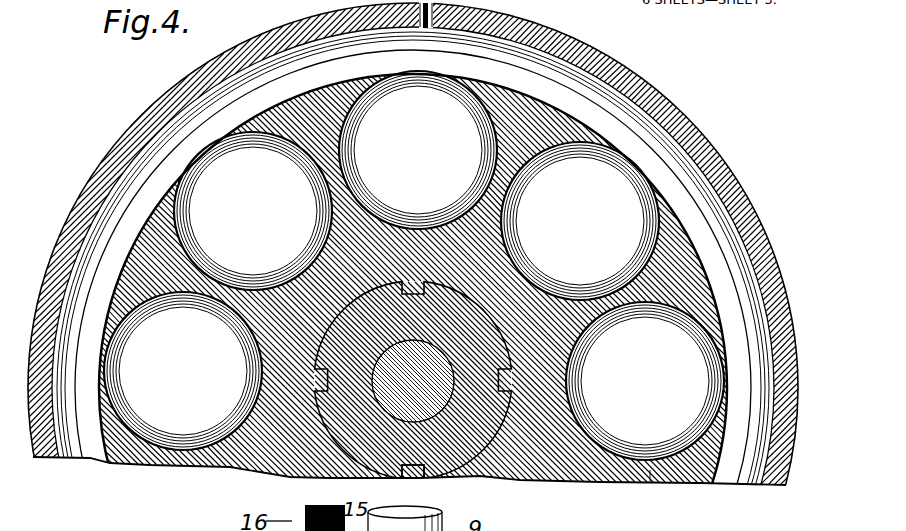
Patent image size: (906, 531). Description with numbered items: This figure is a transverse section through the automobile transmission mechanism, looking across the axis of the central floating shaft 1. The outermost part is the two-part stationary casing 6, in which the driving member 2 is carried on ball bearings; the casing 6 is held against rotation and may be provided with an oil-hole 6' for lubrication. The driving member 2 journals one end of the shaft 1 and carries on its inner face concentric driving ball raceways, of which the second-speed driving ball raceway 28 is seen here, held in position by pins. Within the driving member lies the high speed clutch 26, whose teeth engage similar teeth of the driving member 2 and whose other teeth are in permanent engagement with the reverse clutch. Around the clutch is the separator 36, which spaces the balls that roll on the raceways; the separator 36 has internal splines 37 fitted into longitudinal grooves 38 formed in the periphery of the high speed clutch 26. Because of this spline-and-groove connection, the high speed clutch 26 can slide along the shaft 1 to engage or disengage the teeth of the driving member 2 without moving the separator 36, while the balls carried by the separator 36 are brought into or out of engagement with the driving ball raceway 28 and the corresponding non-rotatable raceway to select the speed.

The central floating shaft 1 is at (300, 478).
The driving member 2 is at (79, 458).
The two-part stationary casing 6 is at (413, 267).
The oil-hole 6' is at (413, 266).
The high speed clutch 26 is at (481, 447).
The driving ball raceway 28 is at (718, 477).
The separator 36 is at (244, 452).
The internal splines 37 is at (393, 381).
The longitudinal grooves 38 is at (413, 480).